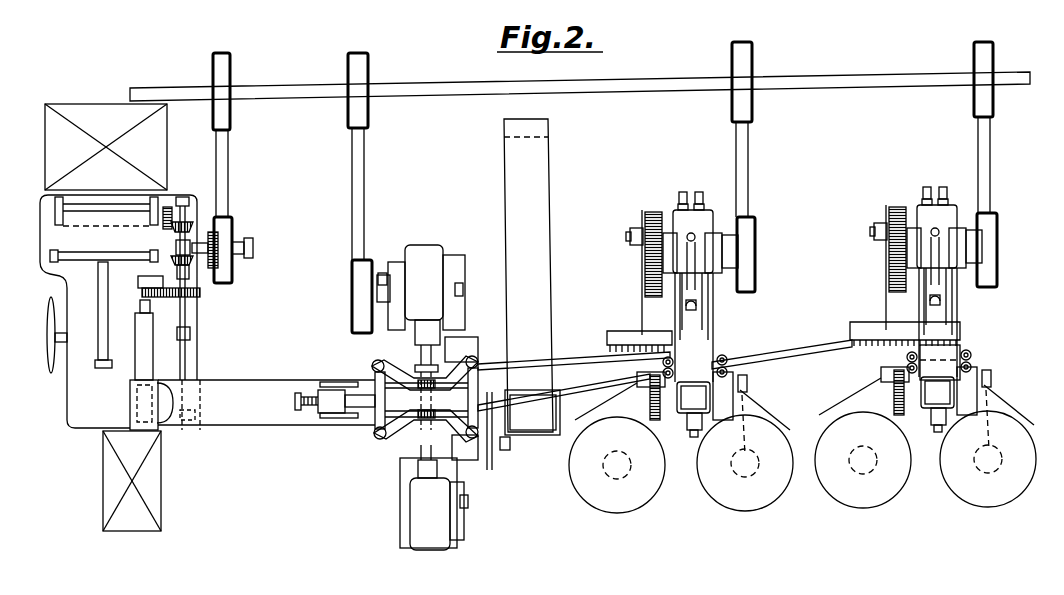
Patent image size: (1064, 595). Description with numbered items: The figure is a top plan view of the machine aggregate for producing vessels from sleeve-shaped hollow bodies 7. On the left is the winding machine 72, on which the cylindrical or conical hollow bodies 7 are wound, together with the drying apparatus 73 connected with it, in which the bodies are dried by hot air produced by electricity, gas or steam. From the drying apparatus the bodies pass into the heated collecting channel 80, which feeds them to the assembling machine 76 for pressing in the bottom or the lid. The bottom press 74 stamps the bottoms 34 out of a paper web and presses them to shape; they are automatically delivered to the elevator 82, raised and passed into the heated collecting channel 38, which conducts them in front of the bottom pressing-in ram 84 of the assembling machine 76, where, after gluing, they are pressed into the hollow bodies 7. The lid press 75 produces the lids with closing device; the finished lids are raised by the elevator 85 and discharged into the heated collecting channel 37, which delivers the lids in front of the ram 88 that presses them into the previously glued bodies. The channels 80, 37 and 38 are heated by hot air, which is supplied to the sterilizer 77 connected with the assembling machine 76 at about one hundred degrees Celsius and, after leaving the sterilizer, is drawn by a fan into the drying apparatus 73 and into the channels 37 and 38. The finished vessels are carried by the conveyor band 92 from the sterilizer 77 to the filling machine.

The sleeve-shaped hollow bodies 7 is at (392, 412).
The bottoms 34 is at (432, 366).
The heated collecting channel 37 is at (568, 352).
The heated collecting channel 38 is at (797, 353).
The winding machine 72 is at (195, 318).
The drying apparatus 73 is at (160, 470).
The bottom press 74 is at (948, 345).
The lid press 75 is at (705, 336).
The assembling machine 76 is at (470, 445).
The sterilizer 77 is at (547, 436).
The heated collecting channel 80 is at (253, 378).
The elevator 82 is at (862, 324).
The bottom pressing-in ram 84 is at (428, 428).
The elevator 85 is at (618, 343).
The ram 88 is at (430, 361).
The conveyor band 92 is at (547, 190).